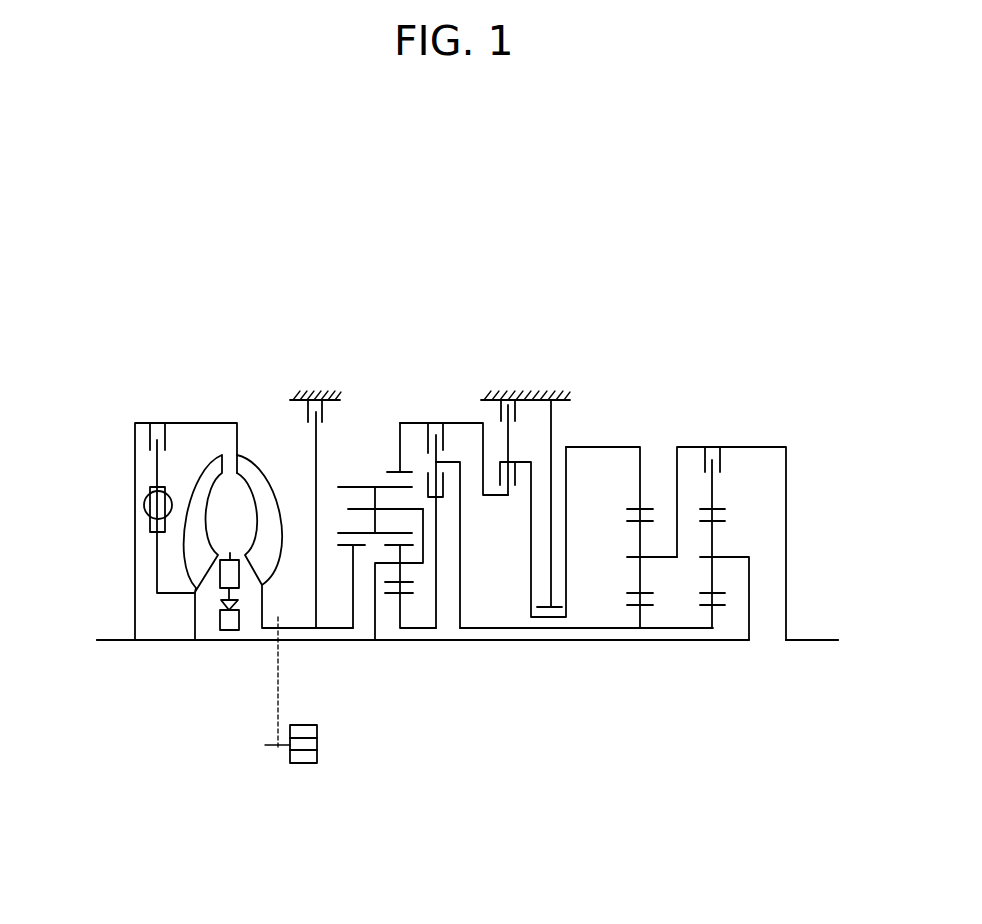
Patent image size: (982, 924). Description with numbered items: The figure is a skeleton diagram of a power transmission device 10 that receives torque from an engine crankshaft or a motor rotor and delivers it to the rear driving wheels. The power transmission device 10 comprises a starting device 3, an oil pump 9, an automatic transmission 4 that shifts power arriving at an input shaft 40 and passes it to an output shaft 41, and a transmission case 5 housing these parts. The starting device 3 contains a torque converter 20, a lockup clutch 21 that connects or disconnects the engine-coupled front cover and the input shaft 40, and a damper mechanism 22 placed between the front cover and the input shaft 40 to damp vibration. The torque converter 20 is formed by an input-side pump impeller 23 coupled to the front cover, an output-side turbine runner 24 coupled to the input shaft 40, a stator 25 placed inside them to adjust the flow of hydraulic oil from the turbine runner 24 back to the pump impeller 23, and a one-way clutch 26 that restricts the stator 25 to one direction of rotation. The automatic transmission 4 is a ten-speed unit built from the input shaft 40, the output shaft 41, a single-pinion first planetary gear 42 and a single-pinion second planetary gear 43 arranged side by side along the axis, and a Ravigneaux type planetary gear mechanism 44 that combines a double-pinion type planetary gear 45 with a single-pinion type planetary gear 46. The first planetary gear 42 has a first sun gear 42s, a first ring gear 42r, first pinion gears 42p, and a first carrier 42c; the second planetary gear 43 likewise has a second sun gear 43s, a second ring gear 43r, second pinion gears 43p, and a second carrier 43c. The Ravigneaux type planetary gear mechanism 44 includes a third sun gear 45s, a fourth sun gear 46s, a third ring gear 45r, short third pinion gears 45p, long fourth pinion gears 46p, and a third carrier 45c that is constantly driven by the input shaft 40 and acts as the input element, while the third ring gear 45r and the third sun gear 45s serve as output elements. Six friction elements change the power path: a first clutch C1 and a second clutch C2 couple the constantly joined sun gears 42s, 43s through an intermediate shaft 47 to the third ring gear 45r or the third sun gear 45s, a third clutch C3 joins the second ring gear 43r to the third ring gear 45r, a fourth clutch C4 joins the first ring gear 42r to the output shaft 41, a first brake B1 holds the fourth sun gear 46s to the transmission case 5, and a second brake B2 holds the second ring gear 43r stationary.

The power transmission device 10 is at (516, 262).
The starting device 3 is at (241, 397).
The automatic transmission 4 is at (606, 386).
The transmission case 5 is at (297, 403).
The oil pump 9 is at (300, 763).
The torque converter 20 is at (213, 437).
The lockup clutch 21 is at (150, 442).
The damper mechanism 22 is at (148, 523).
The pump impeller 23 is at (252, 460).
The turbine runner 24 is at (194, 477).
The stator 25 is at (228, 555).
The one-way clutch 26 is at (220, 622).
The input shaft 40 is at (238, 645).
The output shaft 41 is at (805, 642).
The first planetary gear 42 is at (716, 652).
The first ring gear 42r is at (727, 510).
The first pinion gears 42p is at (727, 556).
The first carrier 42c is at (752, 592).
The first sun gear 42s is at (720, 607).
The second planetary gear 43 is at (641, 652).
The second ring gear 43r is at (632, 510).
The second pinion gears 43p is at (633, 555).
The second carrier 43c is at (657, 560).
The second sun gear 43s is at (632, 606).
The Ravigneaux type planetary gear mechanism 44 is at (338, 713).
The double-pinion type planetary gear 45 is at (410, 652).
The third ring gear 45r is at (385, 468).
The third carrier 45c is at (425, 542).
The third pinion gears 45p is at (418, 576).
The third sun gear 45s is at (408, 600).
The single-pinion type planetary gear 46 is at (357, 652).
The fourth pinion gears 46p is at (368, 487).
The fourth sun gear 46s is at (347, 550).
The intermediate shaft 47 is at (553, 632).
The first brake B1 is at (323, 418).
The second brake B2 is at (513, 418).
The first clutch C1 is at (441, 433).
The second clutch C2 is at (445, 483).
The third clutch C3 is at (540, 463).
The fourth clutch C4 is at (719, 452).